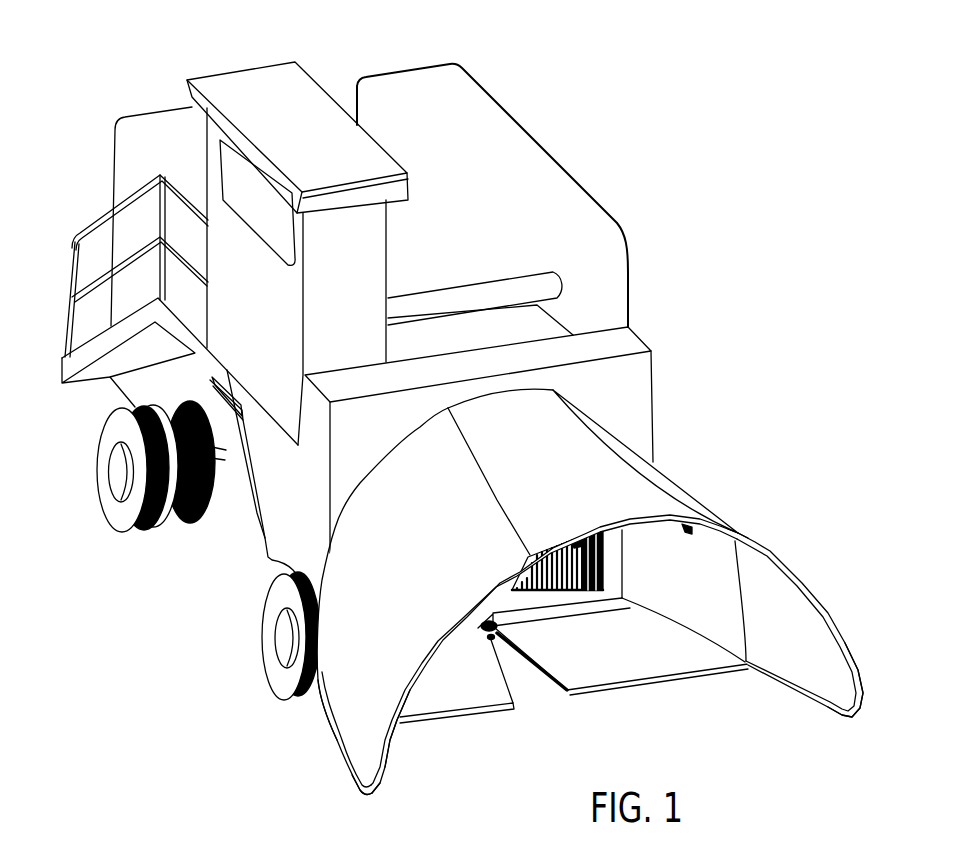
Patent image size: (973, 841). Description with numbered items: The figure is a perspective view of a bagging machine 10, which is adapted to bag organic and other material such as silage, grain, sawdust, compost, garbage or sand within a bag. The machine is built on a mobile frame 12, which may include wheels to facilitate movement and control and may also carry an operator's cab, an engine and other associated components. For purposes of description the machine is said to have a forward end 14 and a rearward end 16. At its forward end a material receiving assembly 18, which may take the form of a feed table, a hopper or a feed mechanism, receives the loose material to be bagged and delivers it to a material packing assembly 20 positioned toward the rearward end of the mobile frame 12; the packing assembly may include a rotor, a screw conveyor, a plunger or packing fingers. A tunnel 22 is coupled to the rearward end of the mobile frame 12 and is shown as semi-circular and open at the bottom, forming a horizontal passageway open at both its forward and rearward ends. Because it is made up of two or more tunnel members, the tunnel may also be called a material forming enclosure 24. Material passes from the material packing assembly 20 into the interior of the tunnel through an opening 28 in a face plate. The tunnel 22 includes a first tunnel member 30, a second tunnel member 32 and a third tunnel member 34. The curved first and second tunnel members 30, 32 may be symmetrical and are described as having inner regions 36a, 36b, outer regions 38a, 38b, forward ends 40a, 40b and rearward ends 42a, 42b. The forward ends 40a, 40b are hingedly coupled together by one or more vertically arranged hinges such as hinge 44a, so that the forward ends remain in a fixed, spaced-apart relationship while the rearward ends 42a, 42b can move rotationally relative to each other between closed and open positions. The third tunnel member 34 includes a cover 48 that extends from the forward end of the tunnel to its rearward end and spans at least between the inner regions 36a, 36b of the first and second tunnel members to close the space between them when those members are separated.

The bagging machine 10 is at (650, 147).
The mobile frame 12 is at (181, 569).
The forward end 14 is at (108, 82).
The rearward end 16 is at (443, 793).
The material receiving assembly 18 is at (417, 100).
The material packing assembly 20 is at (592, 311).
The tunnel 22 is at (786, 425).
The material forming enclosure 24 is at (742, 497).
The opening 28 is at (587, 560).
The first tunnel member 30 is at (352, 703).
The second tunnel member 32 is at (745, 526).
The third tunnel member 34 is at (576, 454).
The inner region 36a is at (586, 540).
The inner region 36b is at (682, 538).
The outer region 38a is at (342, 785).
The outer region 38b is at (838, 722).
The forward end 40a is at (428, 421).
The forward end 40b is at (588, 404).
The rearward end 42a is at (393, 728).
The rearward end 42b is at (840, 627).
The hinge 44a is at (495, 645).
The cover 48 is at (500, 470).